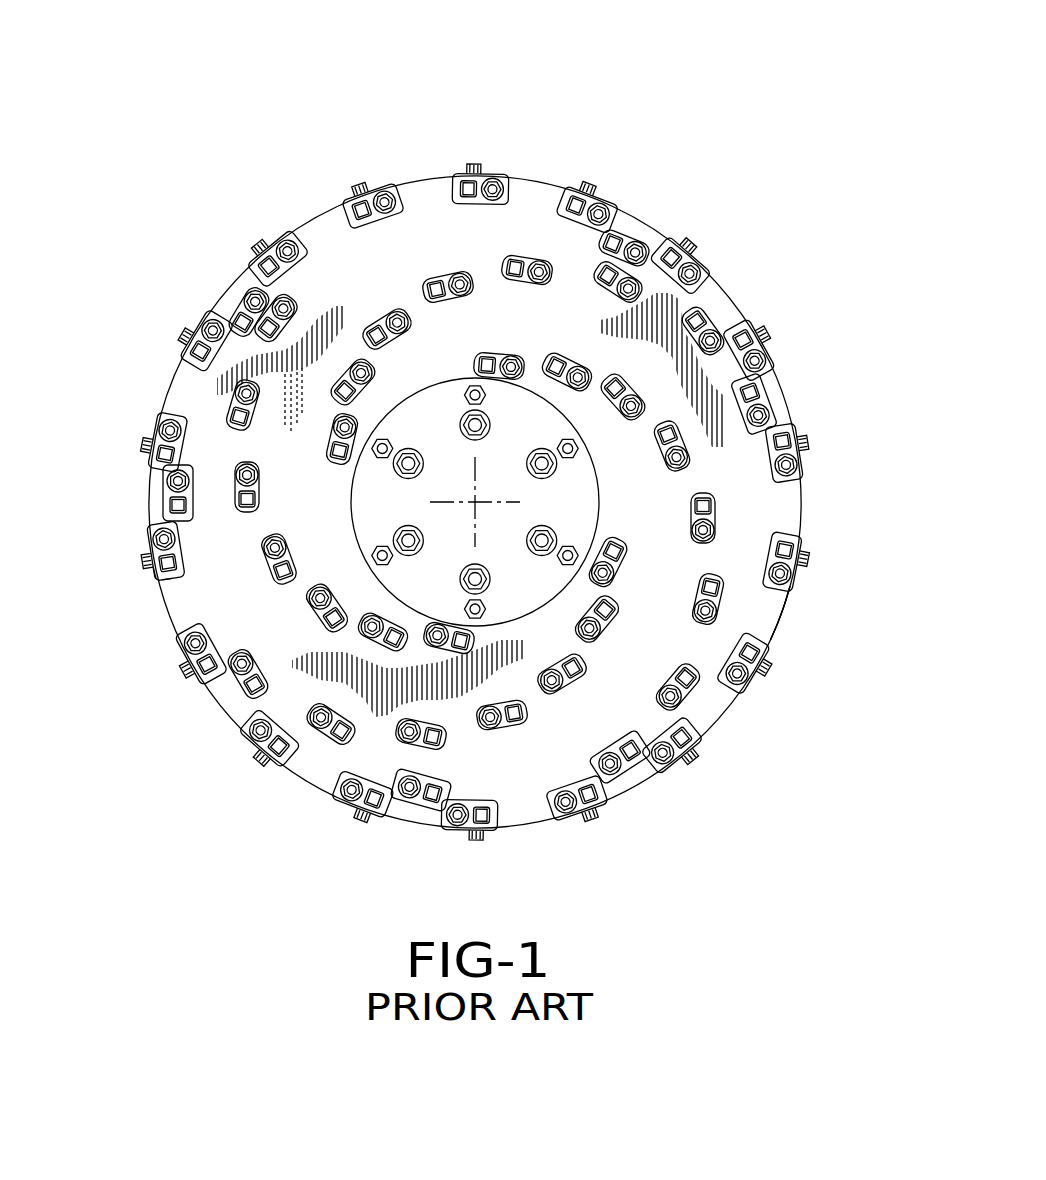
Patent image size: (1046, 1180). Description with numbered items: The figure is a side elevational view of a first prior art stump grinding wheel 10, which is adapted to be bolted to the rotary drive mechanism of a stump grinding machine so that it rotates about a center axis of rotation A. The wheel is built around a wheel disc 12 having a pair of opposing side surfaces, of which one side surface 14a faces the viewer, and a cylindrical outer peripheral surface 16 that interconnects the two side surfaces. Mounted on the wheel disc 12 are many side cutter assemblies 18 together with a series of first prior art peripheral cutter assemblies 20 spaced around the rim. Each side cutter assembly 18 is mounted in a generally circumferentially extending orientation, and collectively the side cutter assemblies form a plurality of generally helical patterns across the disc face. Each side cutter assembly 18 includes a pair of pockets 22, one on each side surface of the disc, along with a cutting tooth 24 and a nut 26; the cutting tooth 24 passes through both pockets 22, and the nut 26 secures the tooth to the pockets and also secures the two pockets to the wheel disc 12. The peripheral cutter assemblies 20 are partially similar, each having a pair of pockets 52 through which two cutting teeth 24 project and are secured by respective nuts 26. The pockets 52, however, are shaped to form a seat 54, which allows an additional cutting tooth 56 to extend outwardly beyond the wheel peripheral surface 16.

The first prior art stump grinding wheel 10 is at (739, 117).
The wheel disc 12 is at (741, 294).
The side surface 14a is at (754, 613).
The outer peripheral surface 16 is at (438, 192).
The side cutter assembly 18 is at (283, 288).
The first prior art peripheral cutter assembly 20 is at (490, 166).
The pocket 22 is at (695, 642).
The cutting tooth 24 is at (208, 328).
The nut 26 is at (213, 329).
The pocket 52 is at (177, 580).
The seat 54 is at (144, 553).
The additional cutting tooth 56 is at (150, 568).
The center axis of rotation A is at (470, 505).